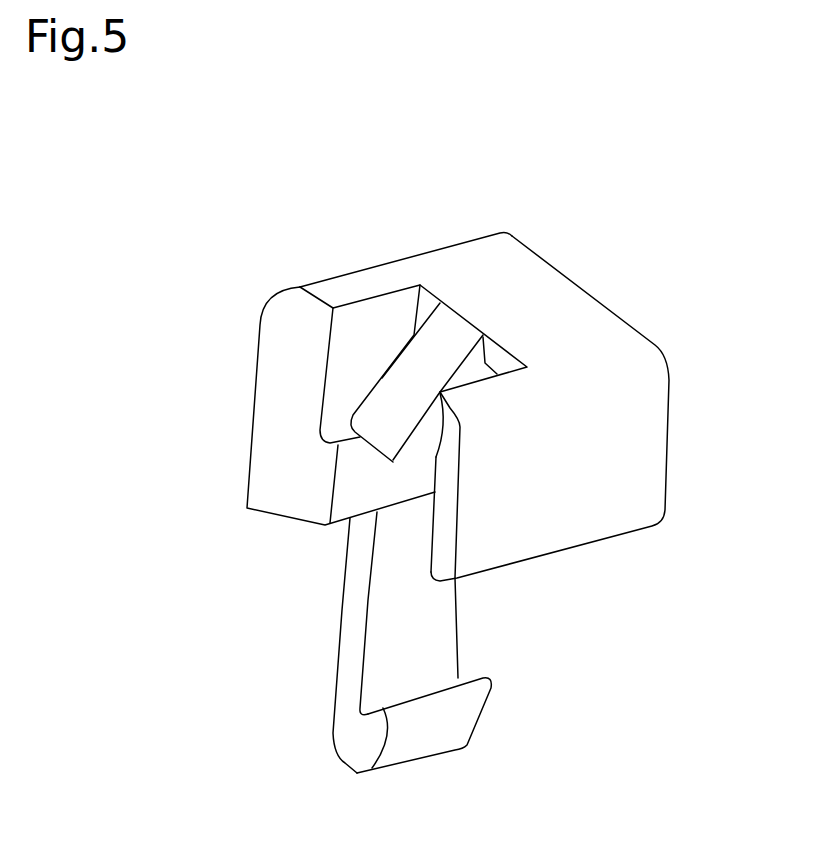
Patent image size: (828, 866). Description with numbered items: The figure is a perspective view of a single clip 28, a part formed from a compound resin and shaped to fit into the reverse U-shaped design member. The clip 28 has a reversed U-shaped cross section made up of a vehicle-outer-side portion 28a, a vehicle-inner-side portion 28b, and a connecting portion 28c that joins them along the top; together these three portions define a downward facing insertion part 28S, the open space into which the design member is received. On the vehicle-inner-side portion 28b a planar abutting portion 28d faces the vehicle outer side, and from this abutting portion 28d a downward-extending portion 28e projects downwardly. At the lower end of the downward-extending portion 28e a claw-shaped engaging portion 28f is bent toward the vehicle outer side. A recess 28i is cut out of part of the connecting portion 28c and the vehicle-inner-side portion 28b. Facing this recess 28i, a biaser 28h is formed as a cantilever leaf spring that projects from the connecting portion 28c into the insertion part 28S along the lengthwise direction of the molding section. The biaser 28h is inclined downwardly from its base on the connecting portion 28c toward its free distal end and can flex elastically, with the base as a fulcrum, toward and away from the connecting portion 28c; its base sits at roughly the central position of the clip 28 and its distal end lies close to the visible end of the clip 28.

The clip 28 is at (263, 252).
The vehicle-outer-side portion 28a is at (552, 538).
The vehicle-inner-side portion 28b is at (284, 437).
The connecting portion 28c is at (538, 293).
The abutting portion 28d is at (352, 482).
The downward-extending portion 28e is at (352, 643).
The engaging portion 28f is at (455, 718).
The biaser 28h is at (413, 378).
The recess 28i is at (370, 337).
The insertion part 28S is at (420, 478).